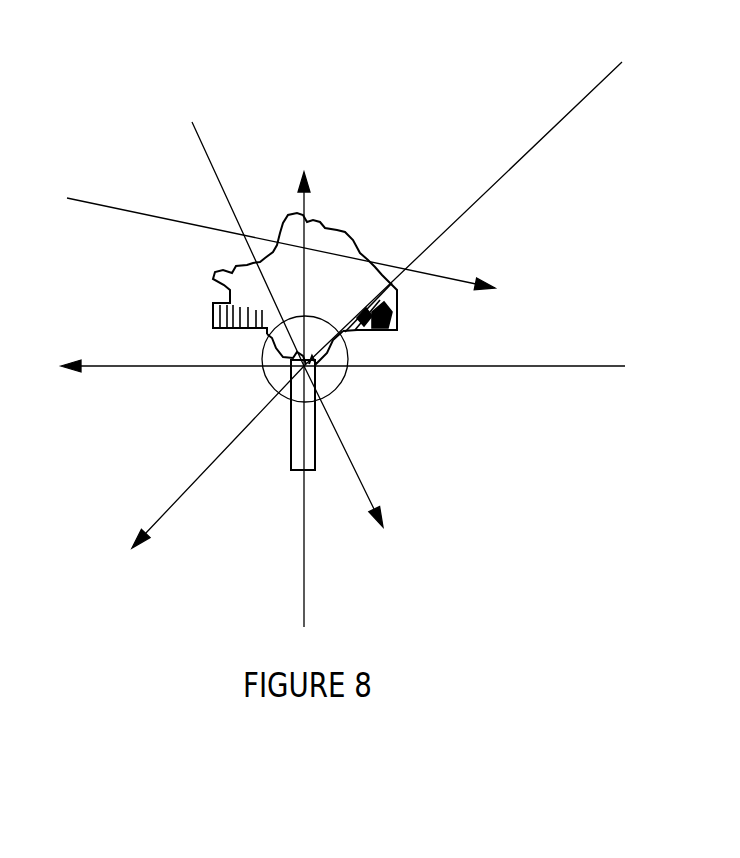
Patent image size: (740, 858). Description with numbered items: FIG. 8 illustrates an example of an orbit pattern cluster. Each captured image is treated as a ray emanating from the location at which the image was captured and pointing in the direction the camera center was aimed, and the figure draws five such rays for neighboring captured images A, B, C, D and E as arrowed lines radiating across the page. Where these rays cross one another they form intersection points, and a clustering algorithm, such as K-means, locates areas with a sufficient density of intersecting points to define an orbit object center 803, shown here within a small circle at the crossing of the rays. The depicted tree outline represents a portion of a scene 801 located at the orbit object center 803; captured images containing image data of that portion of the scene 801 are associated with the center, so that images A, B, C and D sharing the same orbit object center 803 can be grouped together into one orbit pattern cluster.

The portion of a scene 801 is at (222, 303).
The orbit object center 803 is at (264, 338).
The captured image ray A is at (304, 411).
The captured image ray B is at (352, 365).
The captured image ray C is at (385, 294).
The captured image ray D is at (280, 311).
The captured image ray E is at (271, 238).